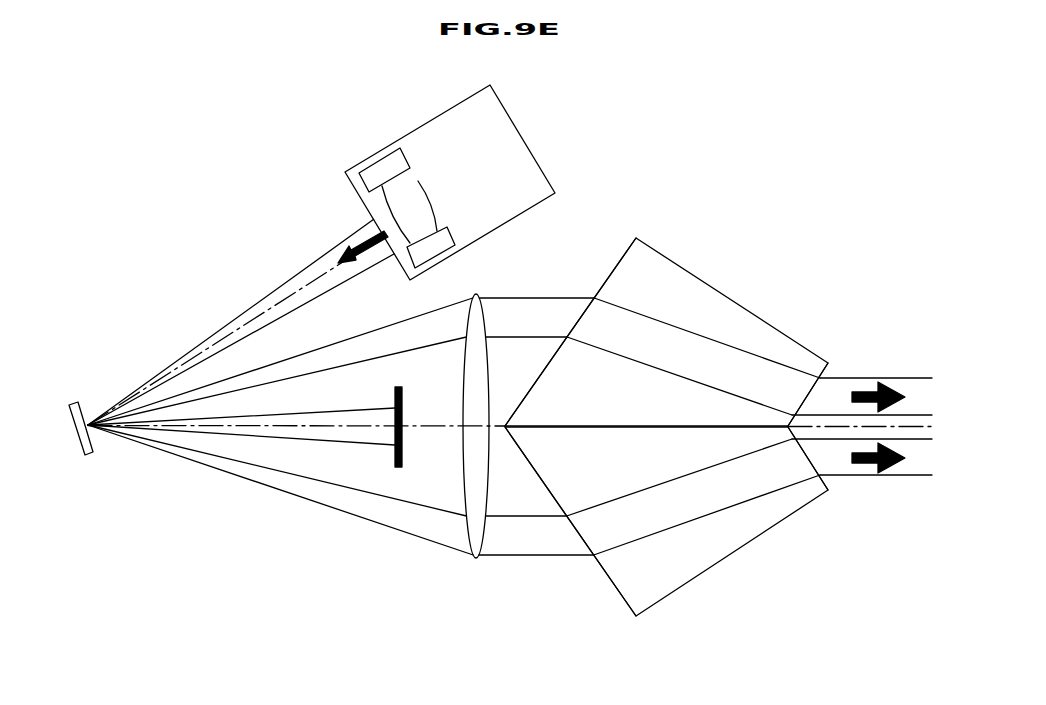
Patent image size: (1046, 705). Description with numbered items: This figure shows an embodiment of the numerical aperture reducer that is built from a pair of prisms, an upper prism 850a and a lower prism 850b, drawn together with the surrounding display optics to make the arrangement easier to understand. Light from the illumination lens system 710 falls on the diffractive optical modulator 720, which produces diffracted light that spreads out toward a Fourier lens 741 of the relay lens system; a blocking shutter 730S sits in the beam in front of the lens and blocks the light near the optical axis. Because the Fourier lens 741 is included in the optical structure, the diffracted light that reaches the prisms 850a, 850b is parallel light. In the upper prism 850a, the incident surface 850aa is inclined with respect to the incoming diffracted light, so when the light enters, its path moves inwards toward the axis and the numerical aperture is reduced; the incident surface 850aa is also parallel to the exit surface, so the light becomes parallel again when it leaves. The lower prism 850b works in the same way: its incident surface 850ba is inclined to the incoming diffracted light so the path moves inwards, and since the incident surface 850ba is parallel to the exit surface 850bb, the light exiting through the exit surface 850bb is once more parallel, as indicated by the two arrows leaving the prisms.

The illumination lens system 710 is at (518, 132).
The diffractive optical modulator 720 is at (83, 400).
The blocking shutter 730S is at (398, 467).
The Fourier lens 741 is at (475, 560).
The upper prism 850a is at (693, 272).
The incident surface of upper prism 850aa is at (618, 257).
The incident surface of lower prism 850ba is at (832, 365).
The lower prism 850b is at (697, 582).
The exit surface of lower prism 850bb is at (832, 488).